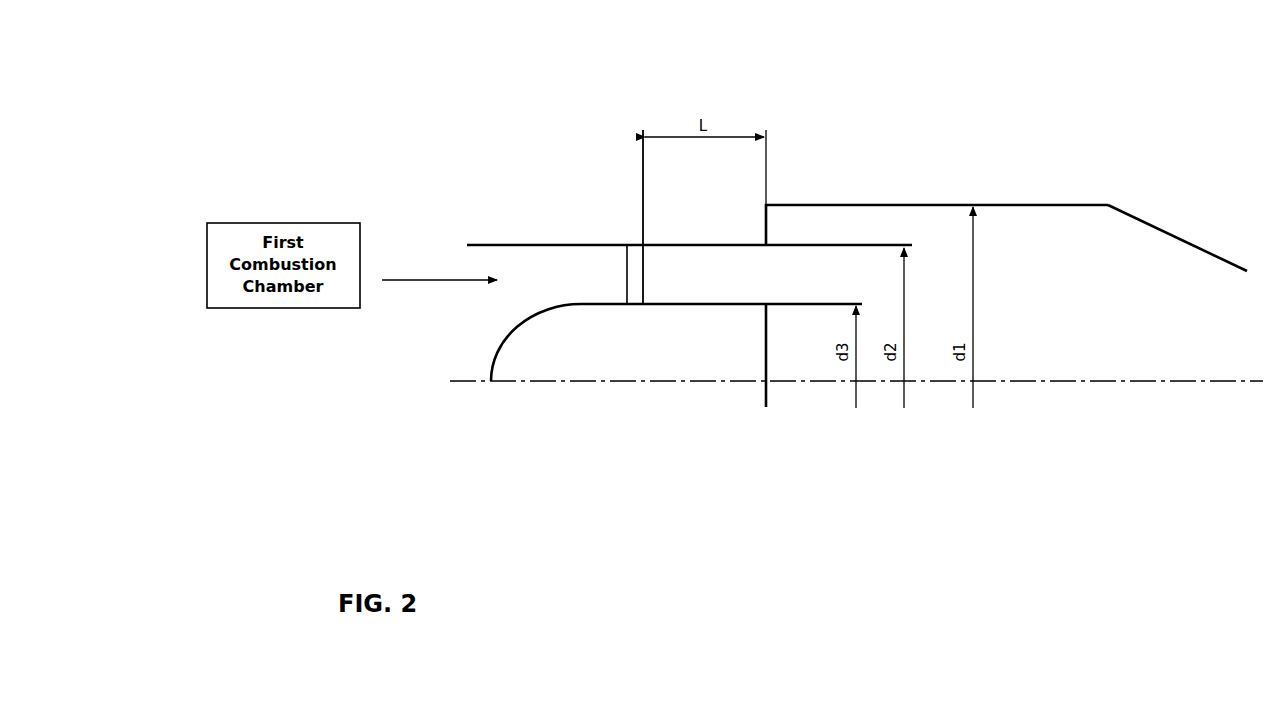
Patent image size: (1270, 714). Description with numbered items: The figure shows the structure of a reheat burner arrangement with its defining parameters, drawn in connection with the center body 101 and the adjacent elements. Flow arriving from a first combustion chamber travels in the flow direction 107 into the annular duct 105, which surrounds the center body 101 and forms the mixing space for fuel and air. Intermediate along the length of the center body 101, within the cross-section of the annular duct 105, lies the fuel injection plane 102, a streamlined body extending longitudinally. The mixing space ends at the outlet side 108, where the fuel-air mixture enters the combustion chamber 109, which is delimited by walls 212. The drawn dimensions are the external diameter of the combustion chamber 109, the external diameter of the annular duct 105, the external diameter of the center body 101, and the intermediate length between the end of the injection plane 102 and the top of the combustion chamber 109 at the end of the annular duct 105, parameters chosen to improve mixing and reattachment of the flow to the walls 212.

The center body 101 is at (676, 342).
The fuel injection plane 102 is at (635, 273).
The annular duct 105 is at (689, 264).
The flow direction 107 is at (415, 280).
The outlet side 108 is at (768, 347).
The combustion chamber 109 is at (1161, 260).
The walls 212 is at (922, 202).